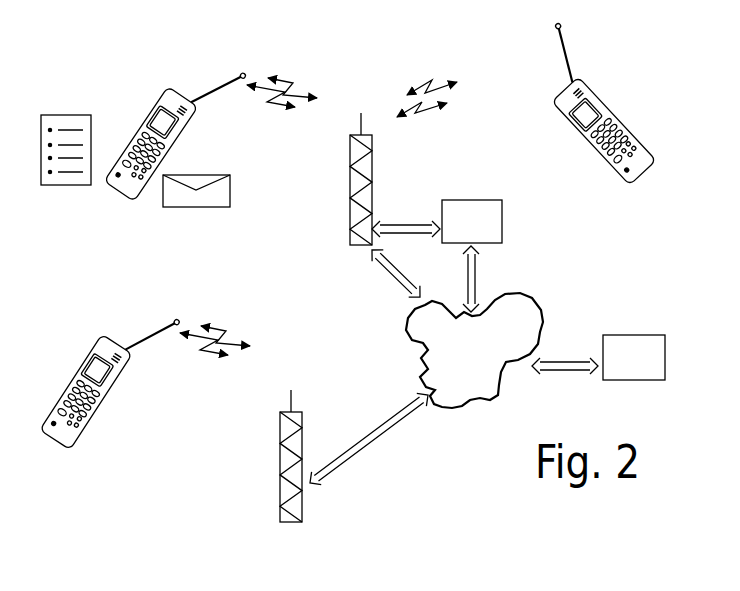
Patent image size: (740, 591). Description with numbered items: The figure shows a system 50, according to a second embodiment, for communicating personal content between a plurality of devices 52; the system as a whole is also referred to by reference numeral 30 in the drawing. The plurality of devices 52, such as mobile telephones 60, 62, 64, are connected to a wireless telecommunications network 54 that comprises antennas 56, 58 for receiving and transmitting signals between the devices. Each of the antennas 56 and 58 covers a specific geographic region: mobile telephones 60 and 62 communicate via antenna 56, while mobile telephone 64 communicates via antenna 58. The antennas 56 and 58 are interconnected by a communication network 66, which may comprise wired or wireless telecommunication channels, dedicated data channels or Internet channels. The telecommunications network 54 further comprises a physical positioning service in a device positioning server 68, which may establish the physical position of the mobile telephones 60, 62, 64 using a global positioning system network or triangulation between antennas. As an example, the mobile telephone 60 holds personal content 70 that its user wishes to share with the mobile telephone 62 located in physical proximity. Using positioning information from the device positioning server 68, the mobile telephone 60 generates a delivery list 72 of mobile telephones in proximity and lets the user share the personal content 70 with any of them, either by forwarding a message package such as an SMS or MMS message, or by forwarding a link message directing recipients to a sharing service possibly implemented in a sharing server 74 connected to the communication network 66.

The communication system 30 is at (342, 0).
The system 50 is at (94, 71).
The plurality of devices 52 is at (618, 100).
The wireless telecommunications network 54 is at (466, 147).
The antenna 56 is at (349, 230).
The antenna 58 is at (292, 467).
The mobile telephone 60 is at (165, 89).
The mobile telephone 62 is at (583, 81).
The mobile telephone 64 is at (100, 343).
The communication network 66 is at (462, 402).
The device positioning server 68 is at (492, 232).
The personal content 70 is at (198, 190).
The delivery list 72 is at (57, 126).
The sharing server 74 is at (642, 343).